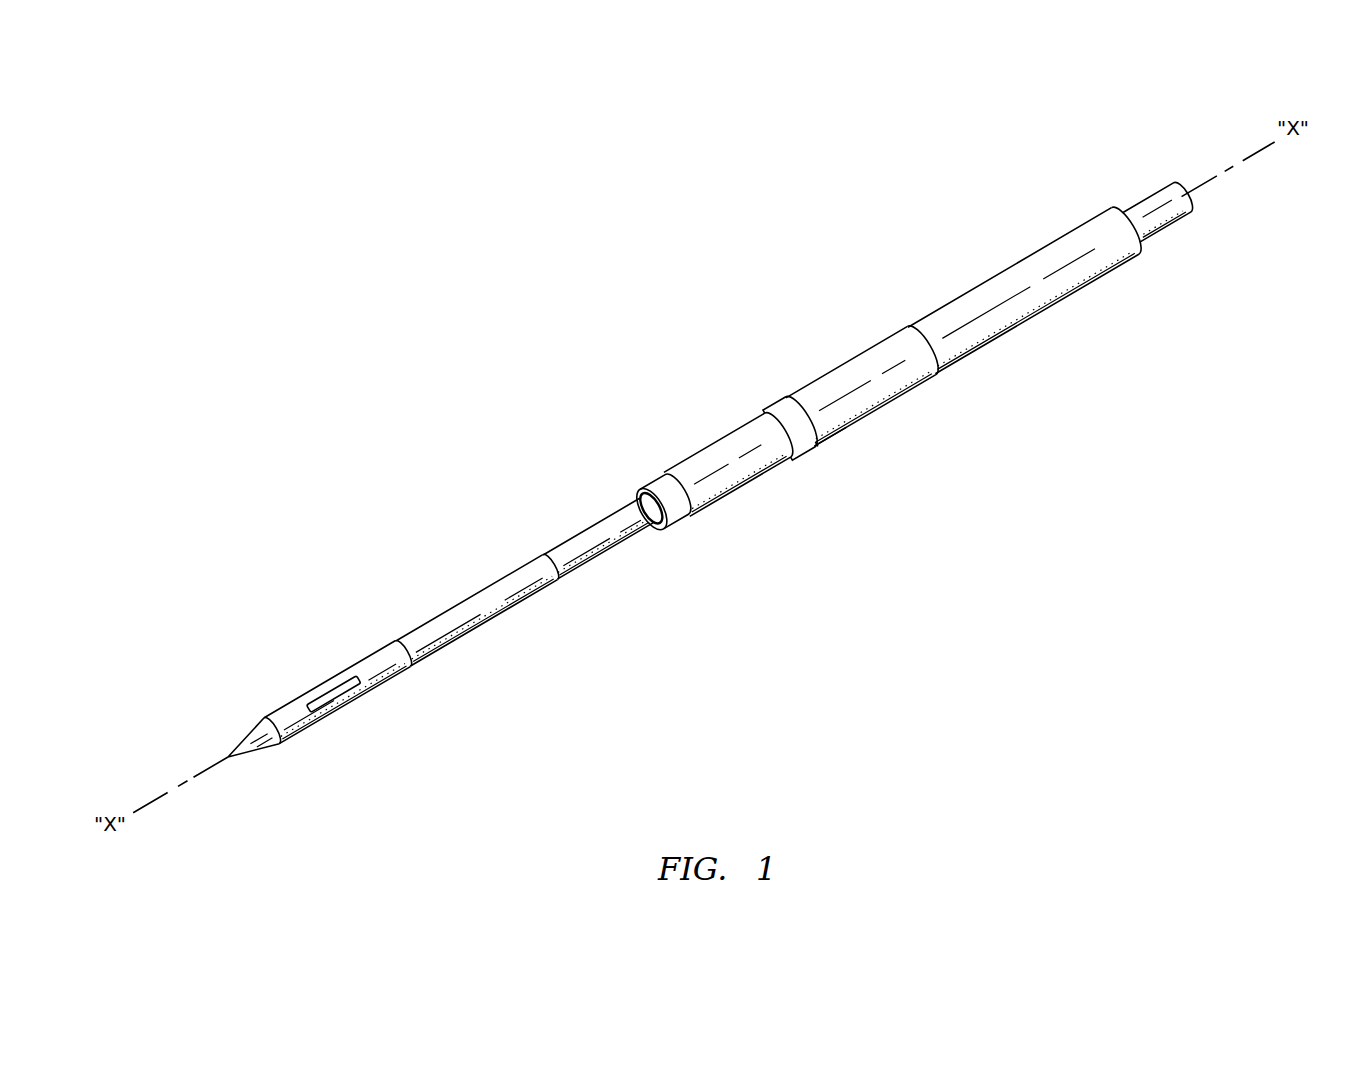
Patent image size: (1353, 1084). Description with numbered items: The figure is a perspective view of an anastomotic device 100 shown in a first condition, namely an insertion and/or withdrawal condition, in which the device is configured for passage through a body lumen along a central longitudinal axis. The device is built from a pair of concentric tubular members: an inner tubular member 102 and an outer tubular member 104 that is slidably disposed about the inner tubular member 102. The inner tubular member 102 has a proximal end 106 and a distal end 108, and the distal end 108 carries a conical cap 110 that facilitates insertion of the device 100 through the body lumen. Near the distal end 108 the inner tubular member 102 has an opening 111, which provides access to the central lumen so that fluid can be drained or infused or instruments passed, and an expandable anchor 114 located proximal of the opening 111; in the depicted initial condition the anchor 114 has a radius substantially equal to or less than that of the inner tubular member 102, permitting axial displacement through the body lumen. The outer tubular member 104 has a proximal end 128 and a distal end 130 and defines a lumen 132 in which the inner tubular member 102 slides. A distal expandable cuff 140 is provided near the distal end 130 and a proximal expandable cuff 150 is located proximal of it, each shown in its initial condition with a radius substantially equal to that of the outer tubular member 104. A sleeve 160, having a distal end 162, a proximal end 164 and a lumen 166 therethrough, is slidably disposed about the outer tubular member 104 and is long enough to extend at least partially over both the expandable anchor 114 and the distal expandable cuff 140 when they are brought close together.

The anastomotic device 100 is at (670, 250).
The inner tubular member 102 is at (548, 533).
The outer tubular member 104 is at (1007, 248).
The proximal end 106 is at (1154, 187).
The distal end 108 is at (288, 699).
The conical cap 110 is at (246, 732).
The opening 111 is at (330, 716).
The expandable anchor 114 is at (412, 625).
The proximal end 128 is at (1079, 224).
The distal end 130 is at (732, 426).
The lumen 132 is at (655, 525).
The distal expandable cuff 140 is at (679, 466).
The proximal expandable cuff 150 is at (775, 417).
The sleeve 160 is at (838, 361).
The distal end 162 is at (825, 436).
The proximal end 164 is at (927, 376).
The lumen 166 is at (800, 453).